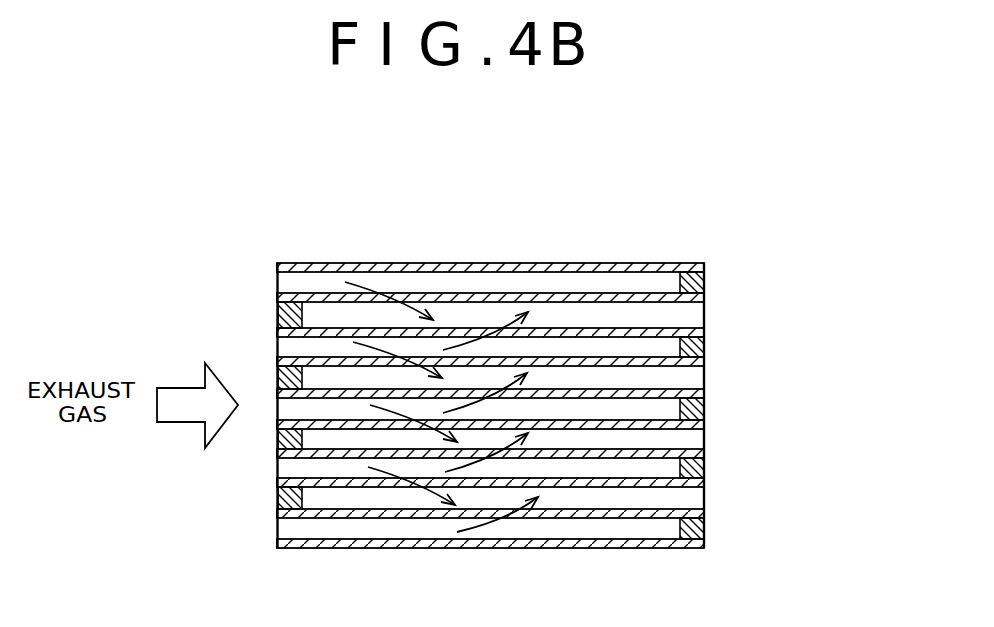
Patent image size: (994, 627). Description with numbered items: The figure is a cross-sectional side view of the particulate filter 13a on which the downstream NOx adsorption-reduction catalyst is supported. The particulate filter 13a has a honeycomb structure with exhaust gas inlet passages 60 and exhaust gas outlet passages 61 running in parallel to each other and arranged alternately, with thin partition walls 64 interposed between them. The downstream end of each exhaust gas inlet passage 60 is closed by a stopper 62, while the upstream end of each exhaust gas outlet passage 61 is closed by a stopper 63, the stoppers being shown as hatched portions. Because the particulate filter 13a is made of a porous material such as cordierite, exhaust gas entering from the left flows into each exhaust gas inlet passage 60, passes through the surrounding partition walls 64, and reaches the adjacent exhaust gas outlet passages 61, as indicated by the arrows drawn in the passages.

The particulate filter 13a is at (571, 263).
The exhaust gas inlet passage 60 is at (661, 280).
The exhaust gas outlet passage 61 is at (319, 308).
The stopper 62 is at (700, 281).
The stopper 63 is at (291, 320).
The partition wall 64 is at (470, 333).